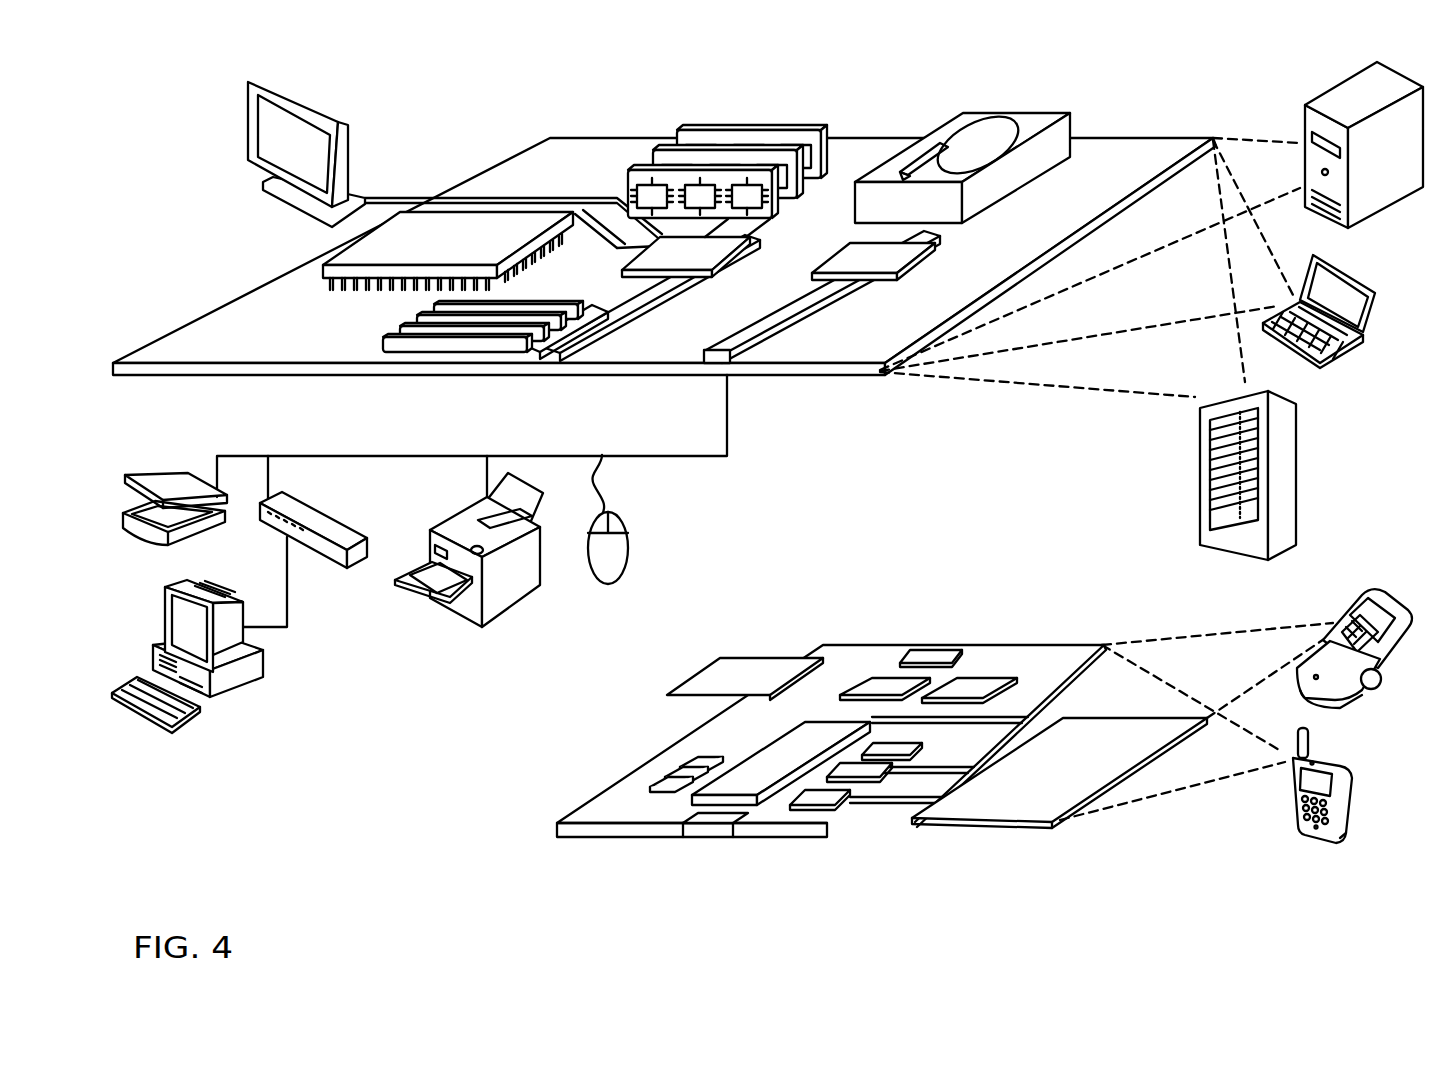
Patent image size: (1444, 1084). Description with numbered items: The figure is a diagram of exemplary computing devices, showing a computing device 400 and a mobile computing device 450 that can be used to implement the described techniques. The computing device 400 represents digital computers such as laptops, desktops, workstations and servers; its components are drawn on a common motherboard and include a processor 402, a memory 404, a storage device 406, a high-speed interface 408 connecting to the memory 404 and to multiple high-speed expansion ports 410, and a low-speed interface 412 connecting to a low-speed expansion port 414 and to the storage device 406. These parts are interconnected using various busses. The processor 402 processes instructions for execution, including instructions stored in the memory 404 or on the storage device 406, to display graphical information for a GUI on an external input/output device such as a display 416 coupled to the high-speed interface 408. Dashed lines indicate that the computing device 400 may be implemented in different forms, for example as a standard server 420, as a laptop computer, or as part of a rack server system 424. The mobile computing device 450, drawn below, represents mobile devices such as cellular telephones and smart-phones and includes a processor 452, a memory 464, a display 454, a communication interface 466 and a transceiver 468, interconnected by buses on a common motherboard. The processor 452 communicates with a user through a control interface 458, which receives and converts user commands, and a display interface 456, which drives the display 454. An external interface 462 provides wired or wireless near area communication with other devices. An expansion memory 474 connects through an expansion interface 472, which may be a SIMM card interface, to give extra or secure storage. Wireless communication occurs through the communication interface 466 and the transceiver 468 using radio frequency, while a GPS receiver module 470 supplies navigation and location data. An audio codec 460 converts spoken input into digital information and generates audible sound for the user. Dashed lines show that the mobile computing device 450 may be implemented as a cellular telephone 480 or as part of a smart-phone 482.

The computing device 400 is at (464, 106).
The processor 402 is at (330, 268).
The memory 404 is at (682, 125).
The storage device 406 is at (955, 113).
The high-speed interface 408 is at (597, 230).
The high-speed expansion ports 410 is at (408, 330).
The low-speed interface 412 is at (852, 252).
The low-speed expansion port 414 is at (755, 363).
The display 416 is at (262, 77).
The standard server 420 is at (1305, 122).
The rack server system 424 is at (1202, 502).
The mobile computing device 450 is at (533, 828).
The processor 452 is at (752, 787).
The display 454 is at (1011, 808).
The display interface 456 is at (827, 797).
The control interface 458 is at (869, 769).
The audio codec 460 is at (893, 748).
The external interface 462 is at (712, 823).
The memory 464 is at (655, 775).
The communication interface 466 is at (883, 687).
The transceiver 468 is at (970, 687).
The GPS receiver module 470 is at (941, 647).
The expansion interface 472 is at (807, 660).
The expansion memory 474 is at (725, 660).
The cellular telephone 480 is at (1340, 565).
The smart-phone 482 is at (1284, 801).